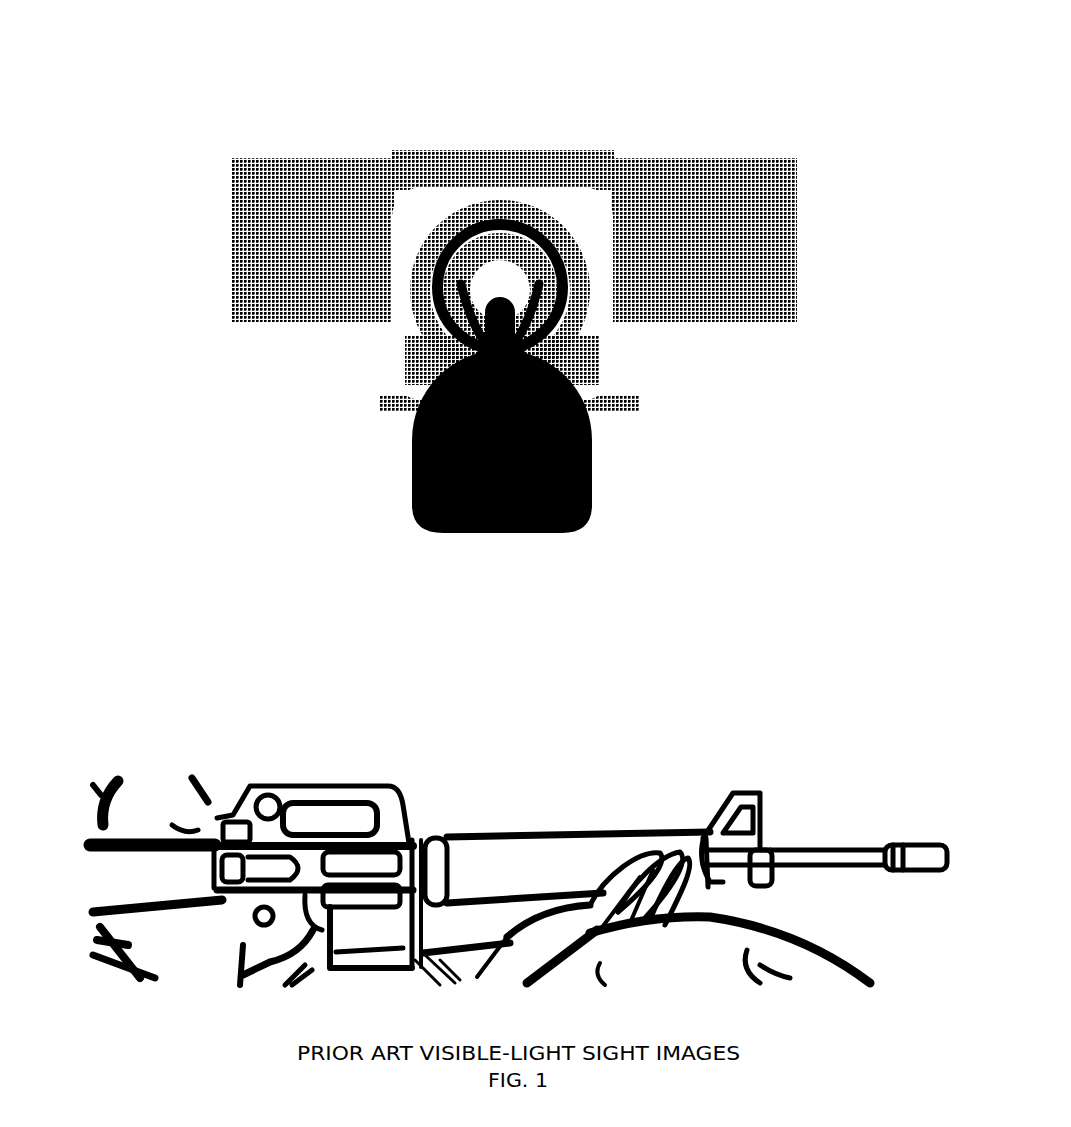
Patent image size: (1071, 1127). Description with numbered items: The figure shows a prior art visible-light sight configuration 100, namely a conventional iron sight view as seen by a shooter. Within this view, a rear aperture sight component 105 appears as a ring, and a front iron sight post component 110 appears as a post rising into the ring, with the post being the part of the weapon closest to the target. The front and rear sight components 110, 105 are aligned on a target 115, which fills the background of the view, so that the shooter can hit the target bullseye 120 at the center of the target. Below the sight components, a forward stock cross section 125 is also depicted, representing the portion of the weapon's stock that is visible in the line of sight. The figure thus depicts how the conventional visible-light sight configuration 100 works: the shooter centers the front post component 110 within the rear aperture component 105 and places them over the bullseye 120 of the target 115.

The prior art visible-light sight configuration 100 is at (76, 34).
The rear aperture sight component 105 is at (433, 361).
The front iron sight post component 110 is at (542, 327).
The target 115 is at (369, 272).
The target bullseye 120 is at (520, 272).
The forward stock cross section 125 is at (513, 557).